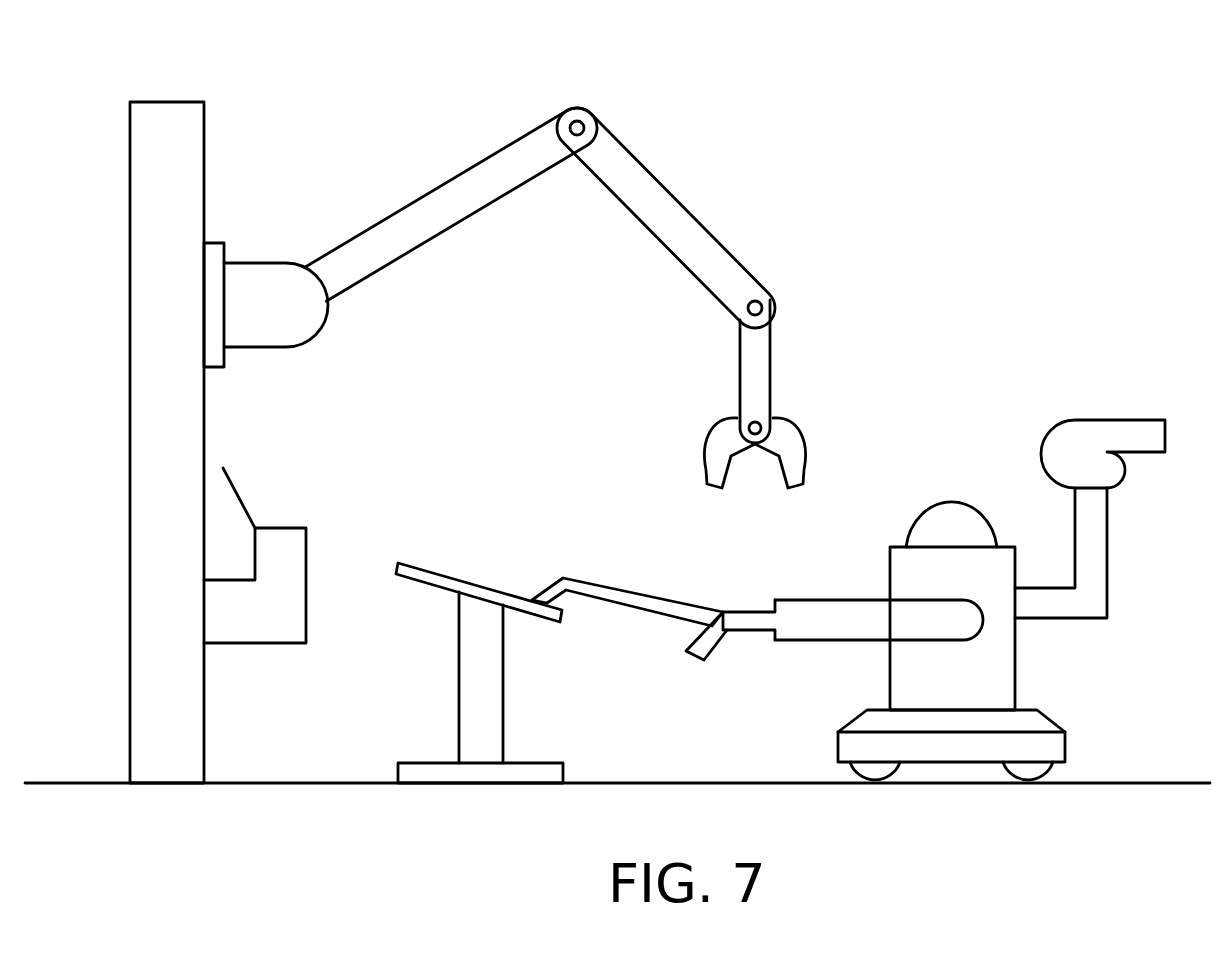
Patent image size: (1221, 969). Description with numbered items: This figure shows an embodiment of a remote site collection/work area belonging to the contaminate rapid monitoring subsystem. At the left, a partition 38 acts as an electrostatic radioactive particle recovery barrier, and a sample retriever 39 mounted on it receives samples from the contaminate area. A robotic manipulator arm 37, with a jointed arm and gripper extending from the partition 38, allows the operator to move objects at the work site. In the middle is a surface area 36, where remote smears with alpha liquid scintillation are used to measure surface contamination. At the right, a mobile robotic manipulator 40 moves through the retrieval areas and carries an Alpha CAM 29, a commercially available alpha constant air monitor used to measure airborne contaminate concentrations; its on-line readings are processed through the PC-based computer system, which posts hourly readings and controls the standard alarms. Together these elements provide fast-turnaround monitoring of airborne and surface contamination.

The partition 38 is at (172, 102).
The robotic manipulator arm 37 is at (680, 205).
The sample retriever 39 is at (282, 528).
The surface area 36 is at (473, 577).
The mobile robotic manipulator 40 is at (955, 493).
The alpha constant air monitor (Alpha CAM) 29 is at (1100, 420).